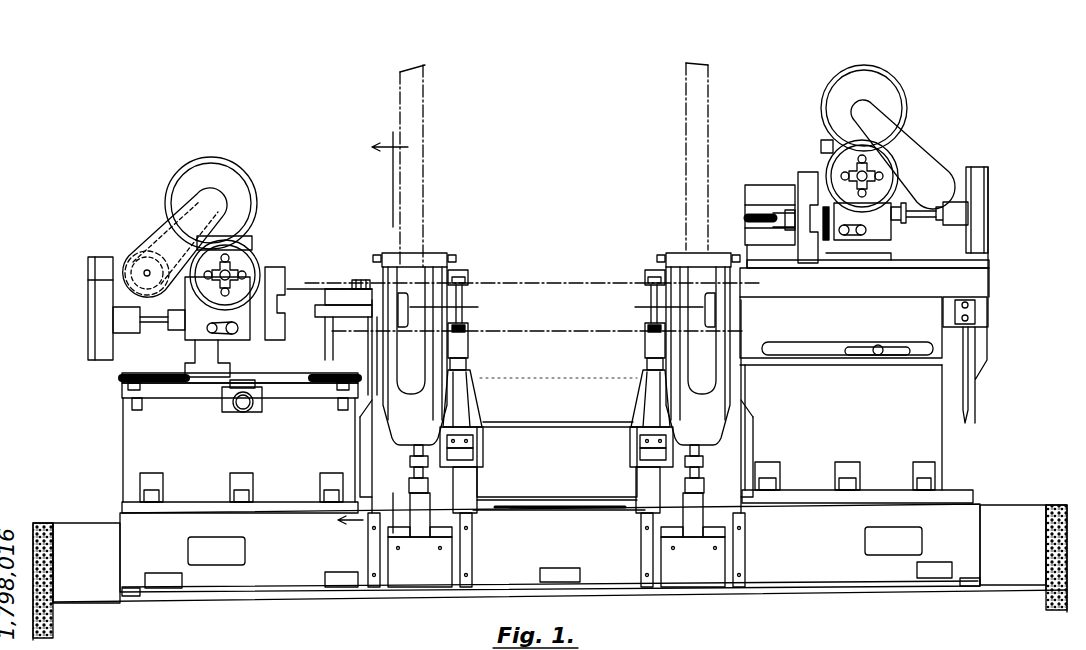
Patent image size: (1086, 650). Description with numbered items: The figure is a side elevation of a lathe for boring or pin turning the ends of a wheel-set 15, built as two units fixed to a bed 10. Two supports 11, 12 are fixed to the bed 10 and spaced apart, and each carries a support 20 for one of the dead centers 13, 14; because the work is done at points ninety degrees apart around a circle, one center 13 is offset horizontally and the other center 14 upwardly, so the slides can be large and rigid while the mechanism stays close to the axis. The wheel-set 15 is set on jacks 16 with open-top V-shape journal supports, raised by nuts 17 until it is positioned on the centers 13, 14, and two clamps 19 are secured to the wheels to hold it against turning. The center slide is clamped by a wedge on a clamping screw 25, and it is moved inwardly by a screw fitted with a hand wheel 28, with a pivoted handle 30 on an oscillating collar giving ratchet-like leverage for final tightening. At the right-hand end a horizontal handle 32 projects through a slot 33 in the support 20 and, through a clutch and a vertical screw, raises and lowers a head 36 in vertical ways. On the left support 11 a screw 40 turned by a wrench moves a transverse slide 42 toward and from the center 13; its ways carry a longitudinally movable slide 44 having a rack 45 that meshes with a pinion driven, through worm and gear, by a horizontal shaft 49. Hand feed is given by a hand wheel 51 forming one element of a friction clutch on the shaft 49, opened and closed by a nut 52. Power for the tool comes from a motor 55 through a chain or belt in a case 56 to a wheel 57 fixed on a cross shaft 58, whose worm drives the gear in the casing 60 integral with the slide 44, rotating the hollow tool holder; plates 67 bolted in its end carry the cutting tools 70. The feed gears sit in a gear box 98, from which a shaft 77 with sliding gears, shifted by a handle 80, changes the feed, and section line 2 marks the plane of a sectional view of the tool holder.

The section line 2- 2 is at (373, 336).
The bed 10 is at (292, 575).
The support 11 is at (281, 450).
The support 12 is at (828, 422).
The dead center 13 is at (460, 296).
The dead center 14 is at (656, 296).
The wheel-set 15 is at (557, 283).
The jacks 16 is at (463, 342).
The nuts 17 is at (475, 445).
The clamps 19 is at (415, 255).
The support 20 is at (303, 356).
The clamping screw 25 is at (357, 280).
The hand wheel 28 is at (983, 313).
The pivoted handle 30 is at (975, 390).
The handle 32 is at (882, 354).
The slot 33 is at (838, 343).
The head 36 is at (926, 220).
The screw 40 is at (240, 408).
The transverse slide 42 is at (175, 390).
The longitudinally movable slide 44 is at (125, 378).
The rack 45 is at (152, 378).
The horizontal shaft 49 is at (240, 268).
The hand wheel 51 is at (230, 270).
The nut 52 is at (226, 285).
The motor 55 is at (218, 178).
The case 56 is at (175, 237).
The wheel 57 is at (152, 243).
The shaft 58 is at (97, 278).
The housing or casing 60 is at (268, 260).
The plates 67 is at (290, 280).
The cutting tools 70 is at (287, 308).
The shaft 77 is at (152, 320).
The handle 80 is at (230, 333).
The gear box 98 is at (100, 320).